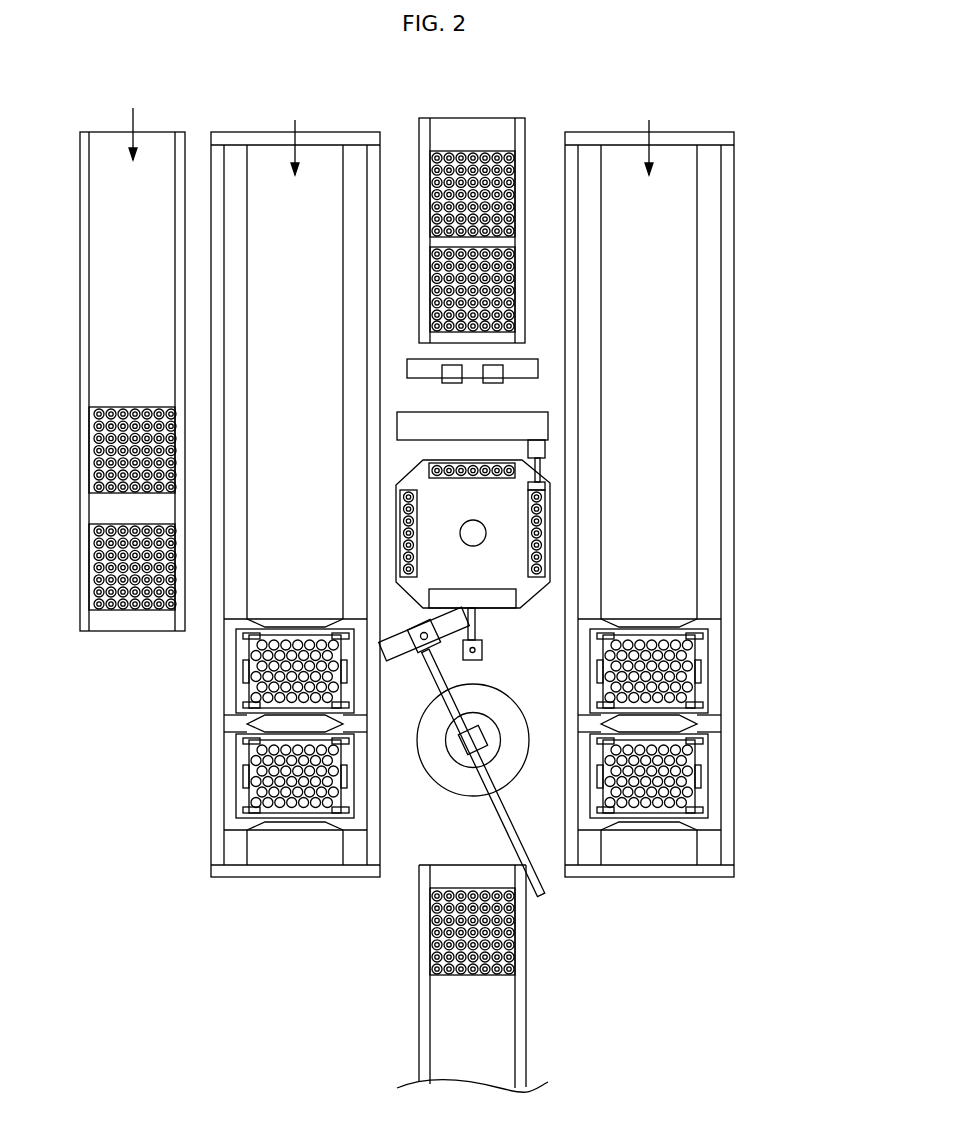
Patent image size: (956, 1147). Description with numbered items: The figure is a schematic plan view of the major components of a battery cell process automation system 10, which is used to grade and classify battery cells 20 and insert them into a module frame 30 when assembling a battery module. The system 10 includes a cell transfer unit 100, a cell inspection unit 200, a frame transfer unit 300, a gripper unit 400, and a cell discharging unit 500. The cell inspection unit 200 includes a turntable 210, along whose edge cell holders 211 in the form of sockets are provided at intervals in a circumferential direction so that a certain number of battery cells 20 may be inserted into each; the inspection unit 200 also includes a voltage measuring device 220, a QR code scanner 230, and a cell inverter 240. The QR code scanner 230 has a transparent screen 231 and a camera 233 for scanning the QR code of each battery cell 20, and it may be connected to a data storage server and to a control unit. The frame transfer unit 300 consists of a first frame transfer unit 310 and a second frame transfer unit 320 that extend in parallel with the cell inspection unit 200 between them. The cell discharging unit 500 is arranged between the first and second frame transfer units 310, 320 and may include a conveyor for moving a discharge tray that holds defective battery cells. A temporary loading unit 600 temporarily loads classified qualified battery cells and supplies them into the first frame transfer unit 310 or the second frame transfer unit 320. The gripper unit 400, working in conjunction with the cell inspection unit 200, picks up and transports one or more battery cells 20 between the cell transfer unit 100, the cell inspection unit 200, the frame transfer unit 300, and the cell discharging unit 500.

The battery cell process automation system 10 is at (170, 88).
The battery cell 20 is at (95, 587).
The module frame 30 is at (230, 794).
The cell transfer unit 100 is at (98, 345).
The cell inspection unit 200 is at (493, 679).
The turntable 210 is at (527, 587).
The cell holder 211 is at (400, 553).
The voltage measuring device 220 is at (500, 600).
The QR code scanner 230 is at (786, 355).
The transparent screen 231 is at (535, 425).
The camera 233 is at (527, 368).
The cell inverter 240 is at (563, 506).
The frame transfer unit 300 is at (470, 600).
The first frame transfer unit 310 is at (196, 866).
The second frame transfer unit 320 is at (745, 574).
The gripper unit 400 is at (404, 675).
The cell discharging unit 500 is at (405, 1012).
The temporary loading unit 600 is at (496, 126).